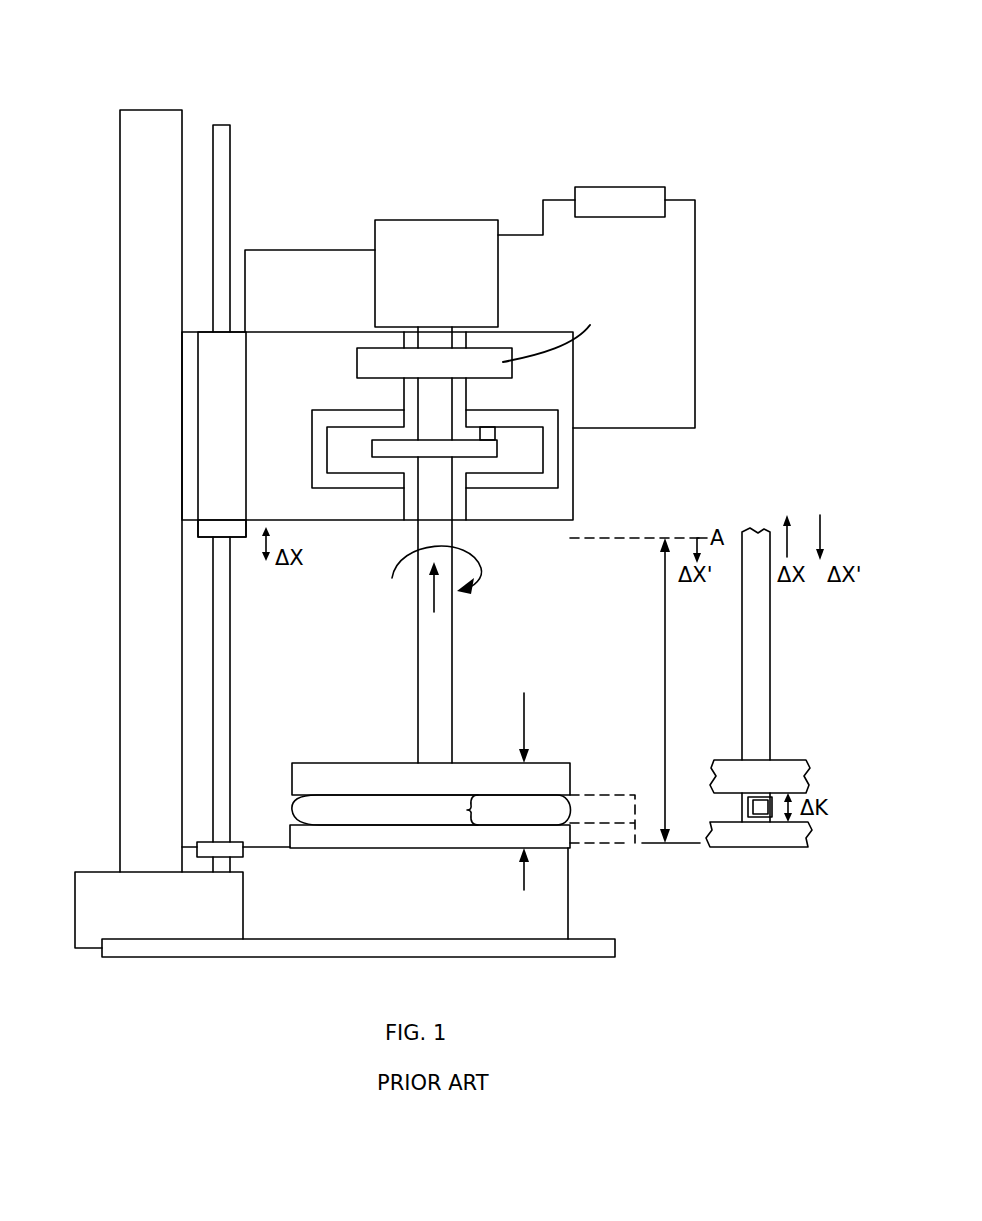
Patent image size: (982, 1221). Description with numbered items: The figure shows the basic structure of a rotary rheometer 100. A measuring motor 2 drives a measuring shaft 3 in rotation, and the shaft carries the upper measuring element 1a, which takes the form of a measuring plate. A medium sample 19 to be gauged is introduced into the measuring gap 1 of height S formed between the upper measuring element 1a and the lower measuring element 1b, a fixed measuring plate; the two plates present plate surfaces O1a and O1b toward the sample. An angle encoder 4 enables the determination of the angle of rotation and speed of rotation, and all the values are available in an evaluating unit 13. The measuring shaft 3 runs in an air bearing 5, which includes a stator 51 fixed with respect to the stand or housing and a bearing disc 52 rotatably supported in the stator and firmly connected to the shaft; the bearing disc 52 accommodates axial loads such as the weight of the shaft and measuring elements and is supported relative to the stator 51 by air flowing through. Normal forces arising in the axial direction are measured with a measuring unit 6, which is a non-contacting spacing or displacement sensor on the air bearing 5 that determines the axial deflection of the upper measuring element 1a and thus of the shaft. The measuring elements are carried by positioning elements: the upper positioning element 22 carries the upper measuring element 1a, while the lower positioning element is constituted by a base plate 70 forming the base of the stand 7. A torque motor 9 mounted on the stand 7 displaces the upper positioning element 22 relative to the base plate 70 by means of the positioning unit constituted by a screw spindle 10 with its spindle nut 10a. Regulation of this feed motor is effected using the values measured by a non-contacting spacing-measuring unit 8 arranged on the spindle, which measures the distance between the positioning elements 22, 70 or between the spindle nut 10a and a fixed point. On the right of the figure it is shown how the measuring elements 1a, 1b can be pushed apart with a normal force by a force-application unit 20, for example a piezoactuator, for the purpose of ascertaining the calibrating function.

The rotary rheometer 100 is at (423, 128).
The screw spindle 10 is at (225, 132).
The spindle nut 10a is at (230, 453).
The stand 7 is at (155, 323).
The upper positioning element 22 is at (325, 340).
The measuring motor 2 is at (470, 232).
The evaluating unit 13 is at (585, 142).
The angle encoder 4 is at (444, 375).
The measuring unit 6 is at (493, 427).
The stator 51 is at (537, 415).
The air bearing 5 is at (530, 450).
The bearing disc 52 is at (497, 457).
The spacing-measuring unit 8 is at (235, 530).
The measuring shaft 3 is at (418, 655).
The upper measuring element 1a is at (362, 770).
The lower measuring element 1b is at (562, 838).
The measuring gap 1 is at (431, 810).
The plate surface O1a is at (295, 805).
The plate surface O1b is at (303, 811).
The medium sample 19 is at (572, 798).
The force-application unit 20 is at (760, 810).
The base plate 70 is at (545, 908).
The torque motor 9 is at (103, 872).